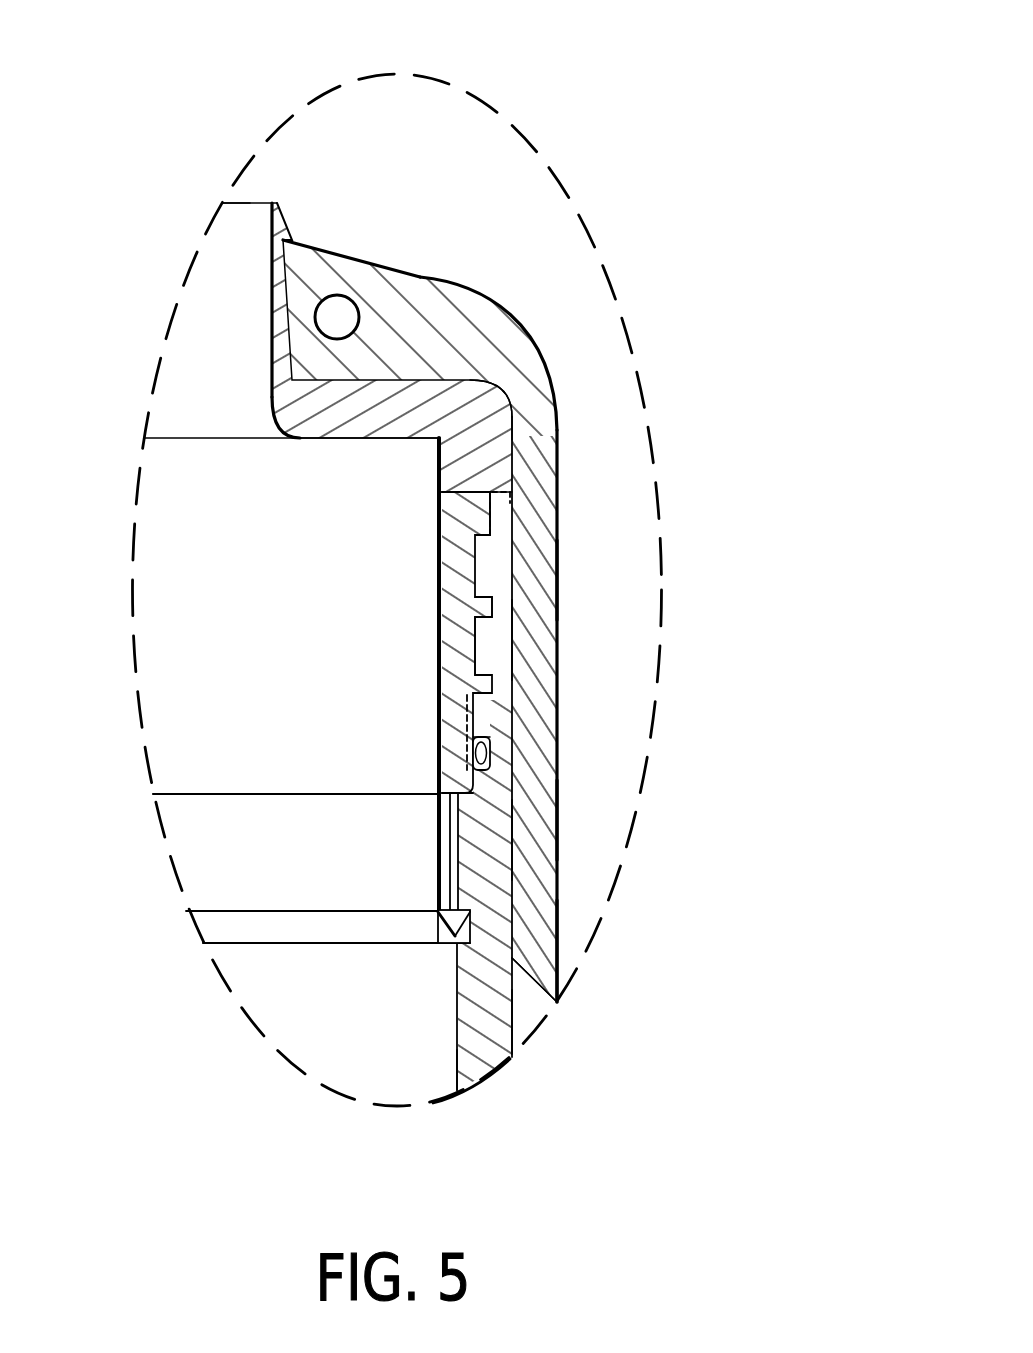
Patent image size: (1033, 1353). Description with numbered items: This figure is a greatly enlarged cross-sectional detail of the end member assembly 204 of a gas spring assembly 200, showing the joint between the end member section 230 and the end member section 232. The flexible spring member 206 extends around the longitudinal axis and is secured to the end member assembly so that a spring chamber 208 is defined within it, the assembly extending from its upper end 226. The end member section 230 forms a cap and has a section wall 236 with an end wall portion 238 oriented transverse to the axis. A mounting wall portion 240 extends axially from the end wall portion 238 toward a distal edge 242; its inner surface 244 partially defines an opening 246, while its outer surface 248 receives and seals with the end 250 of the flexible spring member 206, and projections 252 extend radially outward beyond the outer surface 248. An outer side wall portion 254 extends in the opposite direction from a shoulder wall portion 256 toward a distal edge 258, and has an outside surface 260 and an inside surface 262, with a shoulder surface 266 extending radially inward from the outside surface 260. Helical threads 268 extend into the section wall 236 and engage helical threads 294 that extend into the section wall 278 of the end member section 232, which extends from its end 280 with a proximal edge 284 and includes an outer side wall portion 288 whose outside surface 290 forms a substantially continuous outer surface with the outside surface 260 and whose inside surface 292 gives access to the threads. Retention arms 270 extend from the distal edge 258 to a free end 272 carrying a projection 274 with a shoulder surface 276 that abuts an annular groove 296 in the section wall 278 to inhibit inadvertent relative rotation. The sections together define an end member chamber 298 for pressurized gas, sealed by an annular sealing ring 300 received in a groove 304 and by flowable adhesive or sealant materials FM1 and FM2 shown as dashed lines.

The gas spring assembly 200 is at (663, 115).
The end member assembly 204 is at (512, 820).
The flexible spring member 206 is at (557, 922).
The spring chamber 208 is at (366, 118).
The upper end 226 is at (584, 377).
The end member section 230 is at (478, 383).
The end member section 232 is at (497, 842).
The section wall 236 is at (557, 407).
The end wall portion 238 is at (385, 397).
The mounting wall portion 240 is at (273, 316).
The distal edge 242 is at (253, 203).
The inner surface 244 is at (270, 262).
The opening 246 is at (206, 298).
The outer surface 248 is at (303, 280).
The end of flexible spring member 250 is at (467, 243).
The projections 252 is at (292, 240).
The outer side wall portion 254 is at (462, 604).
The shoulder wall portion 256 is at (470, 427).
The distal edge 258 is at (178, 796).
The outside surface 260 is at (488, 446).
The inside surface 262 is at (487, 530).
The shoulder surface 266 is at (492, 492).
The helical threads 268 is at (470, 642).
The retention arms 270 is at (455, 850).
The free end 272 is at (432, 925).
The projection 274 is at (452, 934).
The shoulder surface 276 is at (556, 958).
The section wall 278 is at (513, 1013).
The end 280 is at (525, 575).
The proximal edge 284 is at (500, 507).
The outer side wall portion 288 is at (497, 1057).
The outside surface 290 is at (513, 1047).
The inside surface 292 is at (453, 1063).
The helical threads 294 is at (502, 637).
The annular groove 296 is at (245, 933).
The end member chamber 298 is at (200, 524).
The annular sealing ring 300 is at (486, 757).
The groove 304 is at (490, 737).
The flowable material FM1 is at (500, 504).
The flowable material FM2 is at (466, 735).